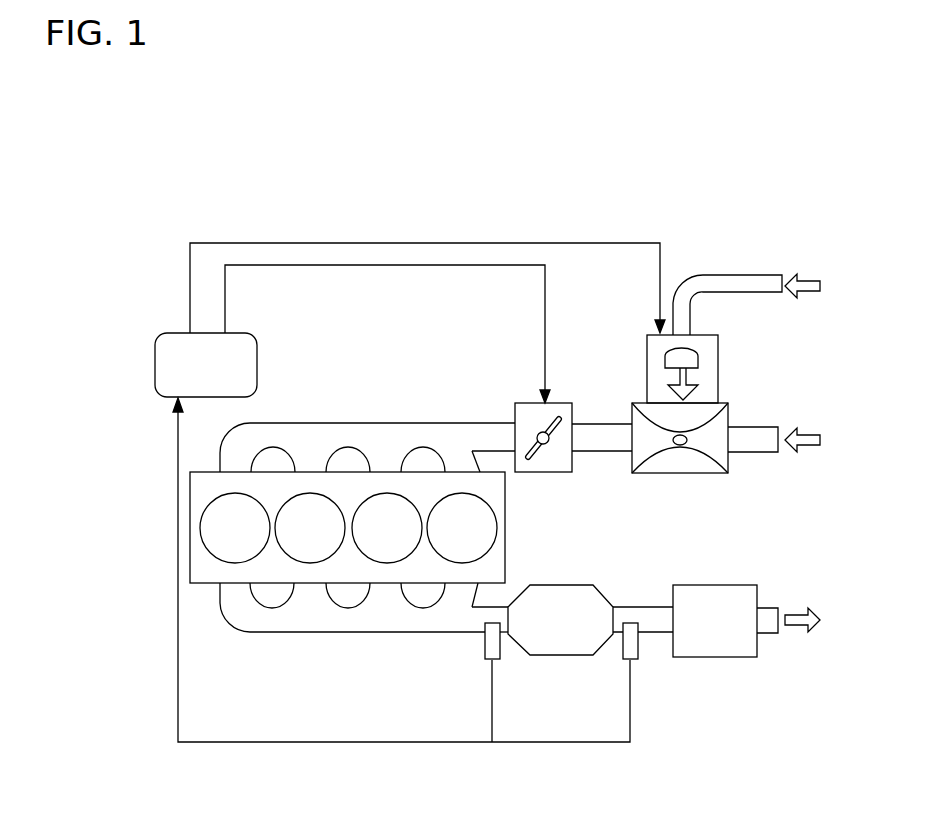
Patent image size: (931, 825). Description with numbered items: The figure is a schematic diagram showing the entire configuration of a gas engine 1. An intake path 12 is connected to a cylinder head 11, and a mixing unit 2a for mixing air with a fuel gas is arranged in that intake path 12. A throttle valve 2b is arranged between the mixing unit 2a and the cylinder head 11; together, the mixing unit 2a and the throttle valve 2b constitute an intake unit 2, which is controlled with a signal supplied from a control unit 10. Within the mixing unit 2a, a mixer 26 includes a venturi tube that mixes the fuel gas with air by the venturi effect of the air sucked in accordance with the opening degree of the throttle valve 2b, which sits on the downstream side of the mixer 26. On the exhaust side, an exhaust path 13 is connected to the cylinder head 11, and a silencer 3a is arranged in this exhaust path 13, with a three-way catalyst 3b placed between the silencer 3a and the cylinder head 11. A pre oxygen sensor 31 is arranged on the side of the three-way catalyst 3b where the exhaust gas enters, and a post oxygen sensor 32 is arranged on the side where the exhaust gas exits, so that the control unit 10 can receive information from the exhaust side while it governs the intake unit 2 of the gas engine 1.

The gas engine 1 is at (197, 208).
The intake unit 2 is at (635, 333).
The mixing unit 2a is at (637, 403).
The throttle valve 2b is at (560, 403).
The silencer 3a is at (722, 647).
The three-way catalyst 3b is at (567, 592).
The control unit 10 is at (153, 366).
The cylinder head 11 is at (505, 503).
The intake path 12 is at (372, 423).
The exhaust path 13 is at (358, 633).
The mixer 26 is at (690, 475).
The pre oxygen sensor 31 is at (485, 645).
The post oxygen sensor 32 is at (622, 648).